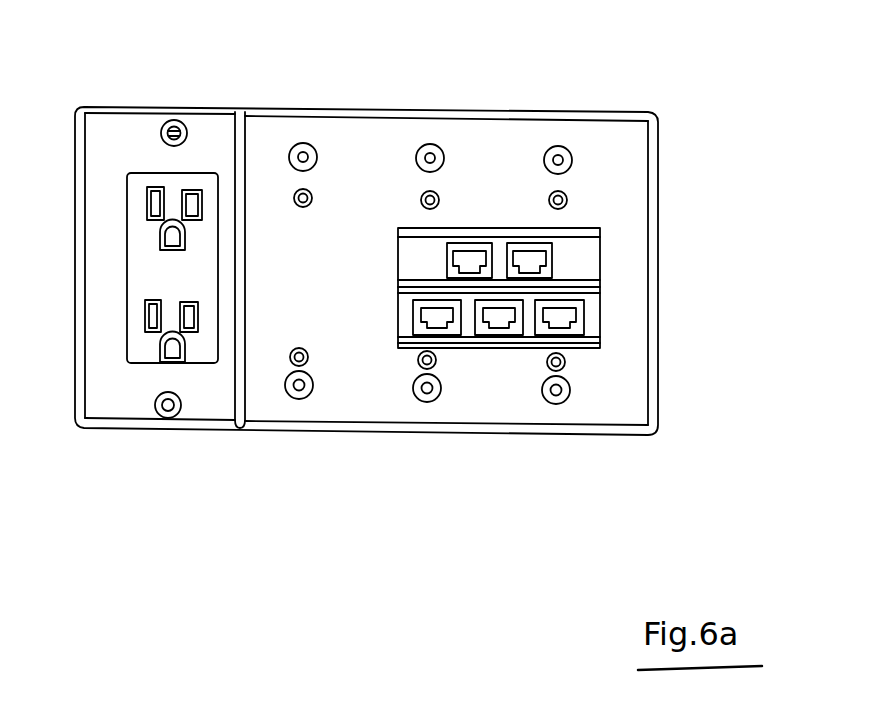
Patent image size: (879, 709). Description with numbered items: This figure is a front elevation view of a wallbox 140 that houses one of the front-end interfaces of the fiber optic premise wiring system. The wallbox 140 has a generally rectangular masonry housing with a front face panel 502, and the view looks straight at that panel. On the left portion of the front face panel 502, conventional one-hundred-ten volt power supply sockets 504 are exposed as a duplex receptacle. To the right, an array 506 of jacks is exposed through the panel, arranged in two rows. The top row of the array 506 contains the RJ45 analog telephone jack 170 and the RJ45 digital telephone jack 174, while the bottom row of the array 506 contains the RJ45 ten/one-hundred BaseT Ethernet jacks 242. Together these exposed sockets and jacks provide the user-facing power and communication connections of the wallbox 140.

The wallbox 140 is at (134, 532).
The RJ45 analog telephone jack 170 is at (468, 262).
The RJ45 digital telephone jack 174 is at (532, 262).
The RJ45 10/100 BaseT Ethernet jacks 242 is at (437, 313).
The front face panel 502 is at (623, 180).
The power supply sockets 504 is at (130, 336).
The array of jacks 506 is at (640, 289).